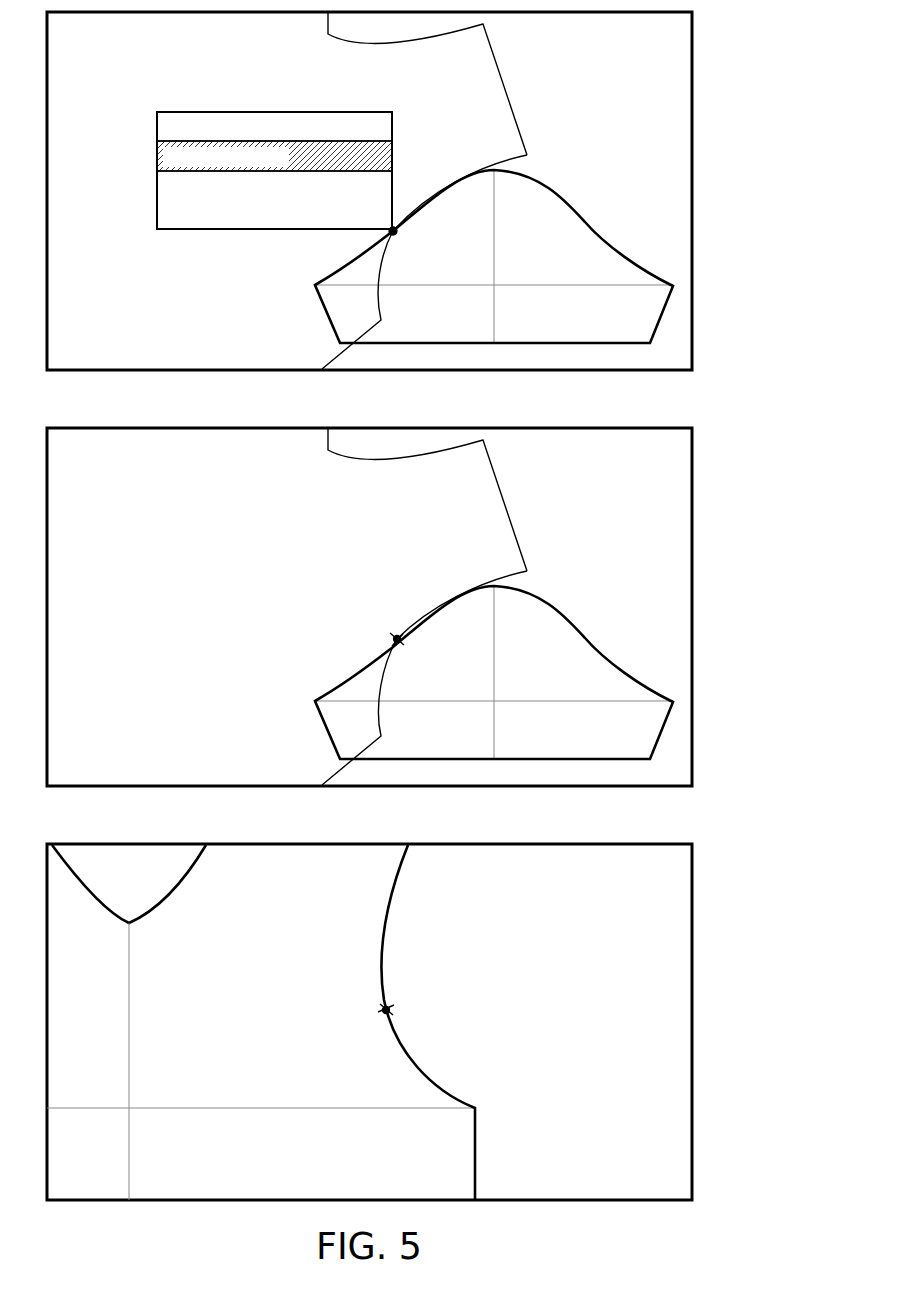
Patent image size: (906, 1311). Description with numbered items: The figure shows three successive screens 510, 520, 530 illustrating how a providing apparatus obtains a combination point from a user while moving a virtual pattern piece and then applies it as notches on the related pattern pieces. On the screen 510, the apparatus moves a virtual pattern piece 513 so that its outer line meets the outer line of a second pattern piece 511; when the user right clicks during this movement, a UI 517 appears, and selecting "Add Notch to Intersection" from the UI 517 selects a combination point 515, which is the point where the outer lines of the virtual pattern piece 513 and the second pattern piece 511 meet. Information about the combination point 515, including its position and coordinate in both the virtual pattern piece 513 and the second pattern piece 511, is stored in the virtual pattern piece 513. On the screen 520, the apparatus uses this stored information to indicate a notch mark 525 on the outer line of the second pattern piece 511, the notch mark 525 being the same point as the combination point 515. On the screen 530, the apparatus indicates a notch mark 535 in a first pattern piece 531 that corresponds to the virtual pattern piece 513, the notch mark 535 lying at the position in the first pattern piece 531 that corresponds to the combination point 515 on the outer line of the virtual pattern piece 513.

The screen 510 is at (692, 191).
The second pattern piece 511 is at (565, 190).
The virtual pattern piece 513 is at (513, 113).
The combination point 515 is at (397, 234).
The UI 517 is at (257, 111).
The screen 520 is at (692, 606).
The notch mark 525 is at (401, 640).
The screen 530 is at (692, 1021).
The first pattern piece 531 is at (476, 1141).
The notch mark 535 is at (389, 1008).